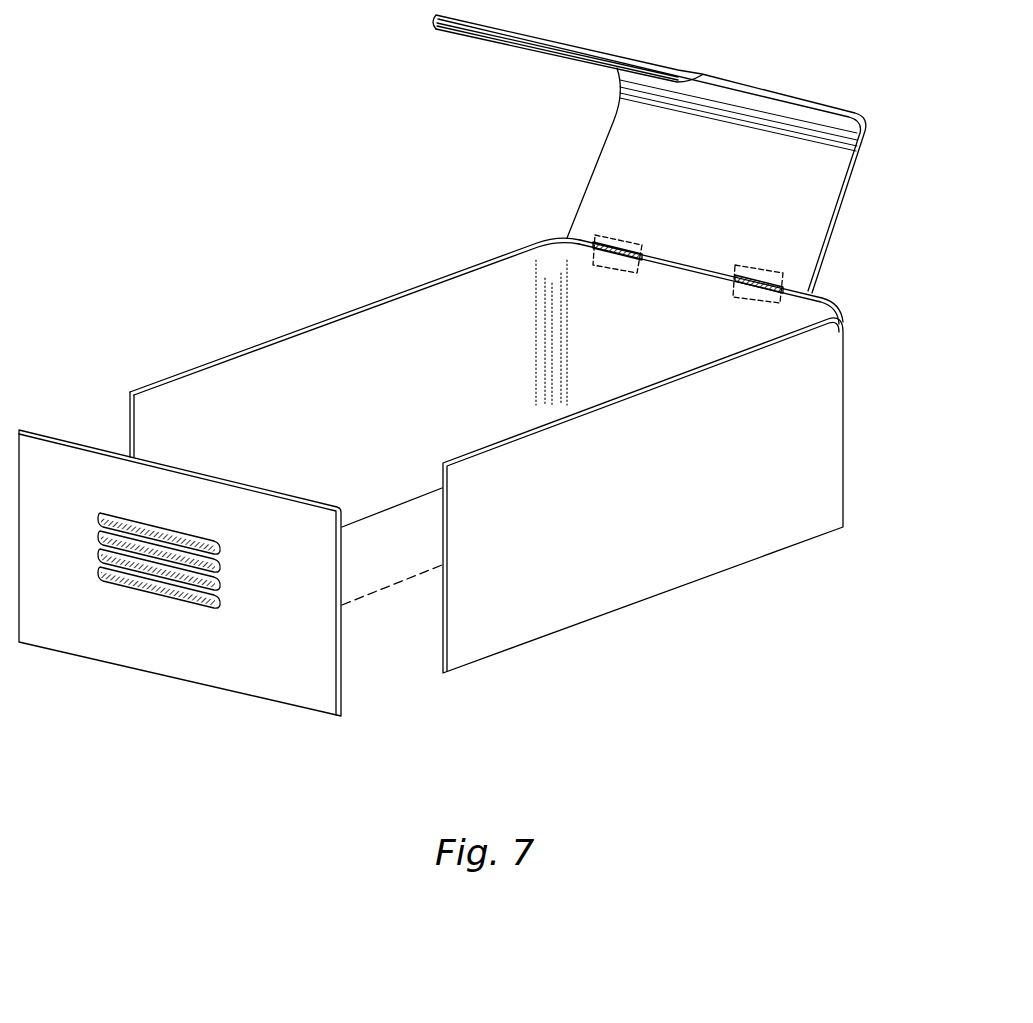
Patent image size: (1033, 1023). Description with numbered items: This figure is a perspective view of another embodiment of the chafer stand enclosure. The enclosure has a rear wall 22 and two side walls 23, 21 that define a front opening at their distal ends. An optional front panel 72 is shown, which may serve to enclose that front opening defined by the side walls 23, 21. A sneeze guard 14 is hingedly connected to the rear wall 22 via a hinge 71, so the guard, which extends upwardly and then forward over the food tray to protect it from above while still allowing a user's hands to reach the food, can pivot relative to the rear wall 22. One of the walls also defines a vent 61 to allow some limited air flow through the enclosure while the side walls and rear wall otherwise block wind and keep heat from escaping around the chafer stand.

The sneeze guard 14 is at (661, 137).
The side wall 21 is at (422, 313).
The rear wall 22 is at (613, 297).
The side wall 23 is at (732, 533).
The vent 61 is at (100, 557).
The hinge 71 is at (627, 235).
The front panel 72 is at (50, 477).